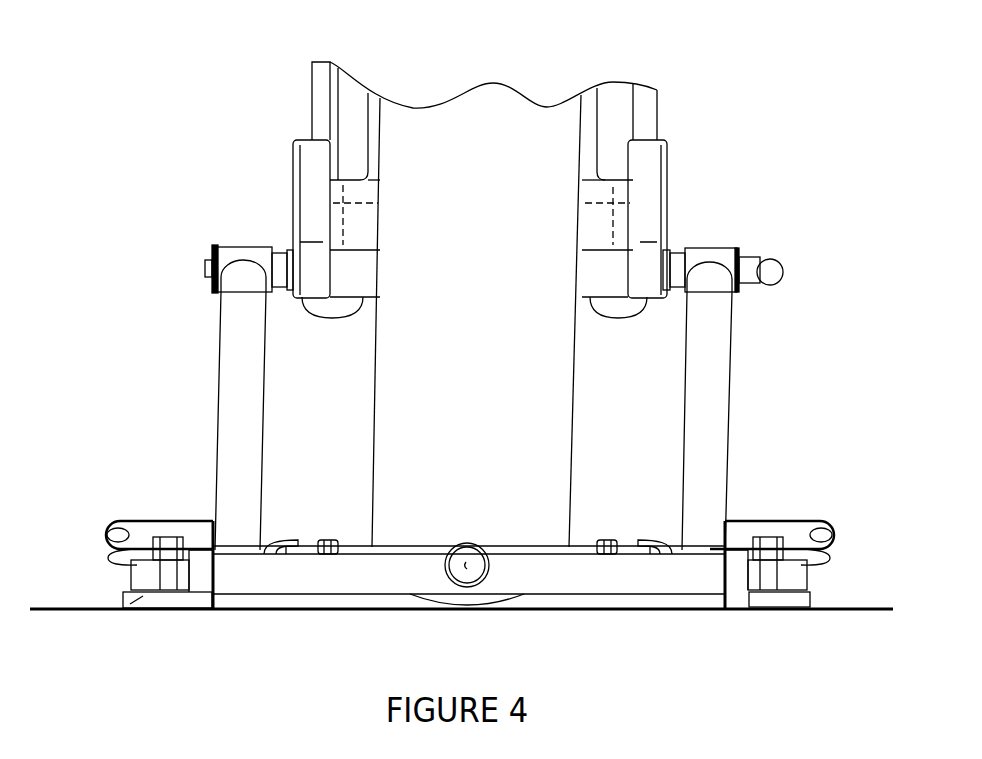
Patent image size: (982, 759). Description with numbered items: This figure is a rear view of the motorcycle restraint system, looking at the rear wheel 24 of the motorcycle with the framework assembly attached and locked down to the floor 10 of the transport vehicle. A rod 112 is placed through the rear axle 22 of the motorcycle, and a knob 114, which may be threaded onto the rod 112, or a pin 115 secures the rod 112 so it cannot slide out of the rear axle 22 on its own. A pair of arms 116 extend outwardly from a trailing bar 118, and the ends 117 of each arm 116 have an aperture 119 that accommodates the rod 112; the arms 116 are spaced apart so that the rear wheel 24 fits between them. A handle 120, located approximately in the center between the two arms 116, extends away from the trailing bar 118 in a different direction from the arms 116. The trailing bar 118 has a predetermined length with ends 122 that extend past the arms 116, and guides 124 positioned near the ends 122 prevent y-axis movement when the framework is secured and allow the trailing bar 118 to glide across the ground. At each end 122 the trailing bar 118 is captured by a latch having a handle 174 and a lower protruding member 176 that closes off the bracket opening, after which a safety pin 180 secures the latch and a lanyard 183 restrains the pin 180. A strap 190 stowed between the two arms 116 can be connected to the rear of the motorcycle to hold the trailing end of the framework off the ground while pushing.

The floor 10 is at (680, 95).
The rear axle 22 is at (612, 258).
The rear wheel 24 is at (468, 170).
The rod 112 is at (208, 270).
The knob 114 is at (780, 263).
The pin 115 is at (215, 245).
The arm 116 is at (227, 347).
The end 117 is at (235, 253).
The trailing bar 118 is at (552, 583).
The aperture 119 is at (277, 247).
The handle 120 is at (460, 570).
The end 122 is at (137, 573).
The guide 124 is at (200, 593).
The handle 174 is at (170, 547).
The lower protruding member 176 is at (137, 607).
The pin 180 is at (145, 520).
The lanyard 183 is at (110, 557).
The strap 190 is at (577, 548).